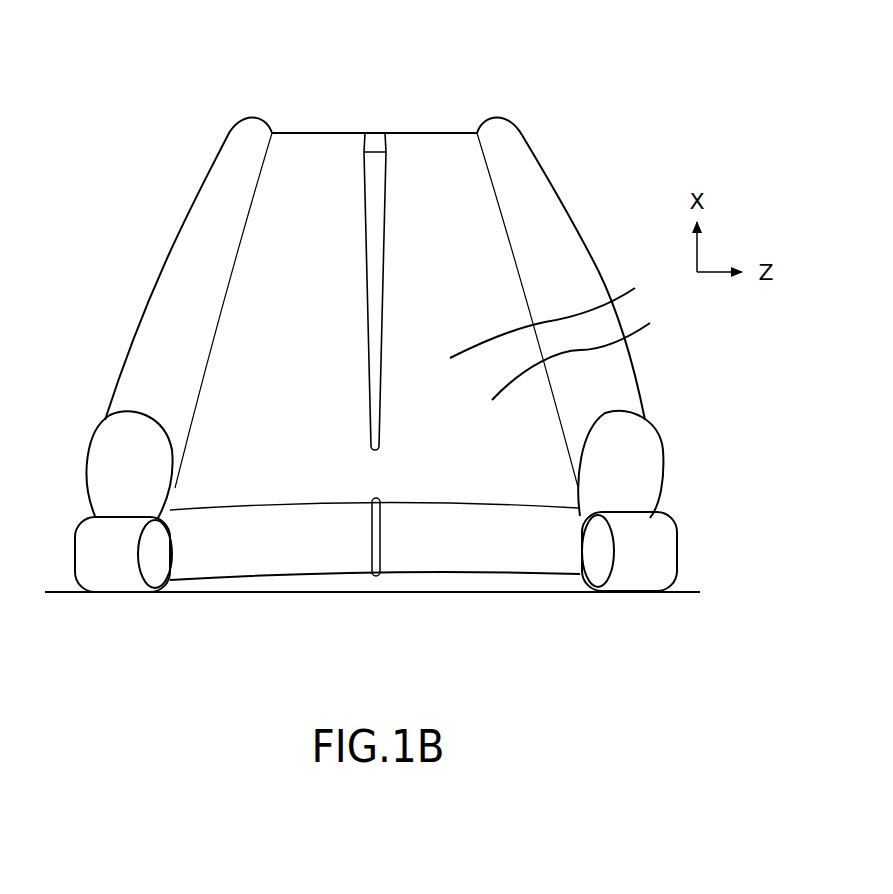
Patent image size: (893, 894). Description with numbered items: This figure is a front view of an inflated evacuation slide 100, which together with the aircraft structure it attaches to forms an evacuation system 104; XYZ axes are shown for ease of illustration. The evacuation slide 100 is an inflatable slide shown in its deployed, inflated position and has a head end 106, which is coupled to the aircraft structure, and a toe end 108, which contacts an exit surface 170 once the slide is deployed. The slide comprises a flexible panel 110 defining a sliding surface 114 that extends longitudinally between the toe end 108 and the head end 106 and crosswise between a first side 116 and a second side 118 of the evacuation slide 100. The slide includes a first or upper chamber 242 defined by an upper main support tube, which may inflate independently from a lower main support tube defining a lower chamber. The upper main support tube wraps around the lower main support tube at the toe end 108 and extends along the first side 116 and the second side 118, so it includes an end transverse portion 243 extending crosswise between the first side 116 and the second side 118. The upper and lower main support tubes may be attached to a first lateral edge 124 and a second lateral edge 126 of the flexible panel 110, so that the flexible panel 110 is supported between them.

The evacuation slide 100 is at (537, 237).
The evacuation system 104 is at (614, 128).
The head end 106 is at (432, 122).
The toe end 108 is at (309, 580).
The flexible panel 110 is at (586, 355).
The sliding surface 114 is at (559, 315).
The first side 116 is at (152, 348).
The second side 118 is at (598, 381).
The first lateral edge 124 is at (221, 309).
The second lateral edge 126 is at (509, 294).
The exit surface 170 is at (681, 585).
The first chamber (upper chamber) 242 is at (175, 256).
The end transverse portion 243 is at (523, 552).